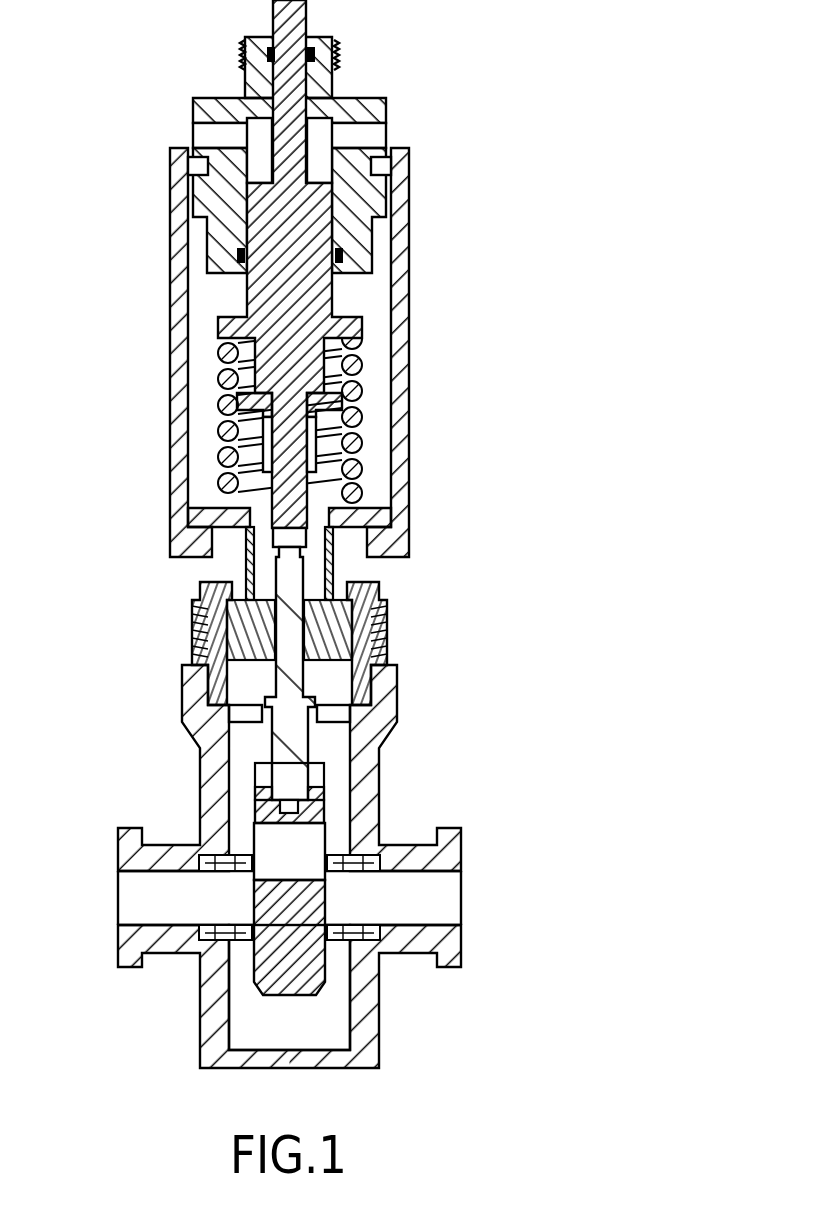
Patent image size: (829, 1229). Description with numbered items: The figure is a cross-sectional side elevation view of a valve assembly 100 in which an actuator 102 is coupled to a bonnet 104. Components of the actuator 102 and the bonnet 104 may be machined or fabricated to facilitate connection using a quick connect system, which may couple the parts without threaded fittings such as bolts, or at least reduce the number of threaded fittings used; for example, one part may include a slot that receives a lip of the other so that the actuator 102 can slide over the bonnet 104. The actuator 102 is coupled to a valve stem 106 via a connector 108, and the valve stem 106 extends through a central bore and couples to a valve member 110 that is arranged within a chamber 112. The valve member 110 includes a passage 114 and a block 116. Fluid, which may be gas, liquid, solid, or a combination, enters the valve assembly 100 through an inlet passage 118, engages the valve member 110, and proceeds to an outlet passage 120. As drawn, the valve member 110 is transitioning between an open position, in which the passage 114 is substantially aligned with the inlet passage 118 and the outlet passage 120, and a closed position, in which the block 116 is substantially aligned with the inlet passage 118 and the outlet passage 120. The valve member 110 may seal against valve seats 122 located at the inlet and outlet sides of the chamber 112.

The valve assembly 100 is at (282, 866).
The actuator 102 is at (139, 241).
The bonnet 104 is at (406, 630).
The valve stem 106 is at (278, 558).
The connector 108 is at (300, 522).
The valve member 110 is at (232, 976).
The chamber 112 is at (323, 1017).
The passage 114 is at (290, 822).
The block 116 is at (320, 972).
The inlet passage 118 is at (152, 932).
The outlet passage 120 is at (455, 907).
The valve seats 122 is at (222, 862).